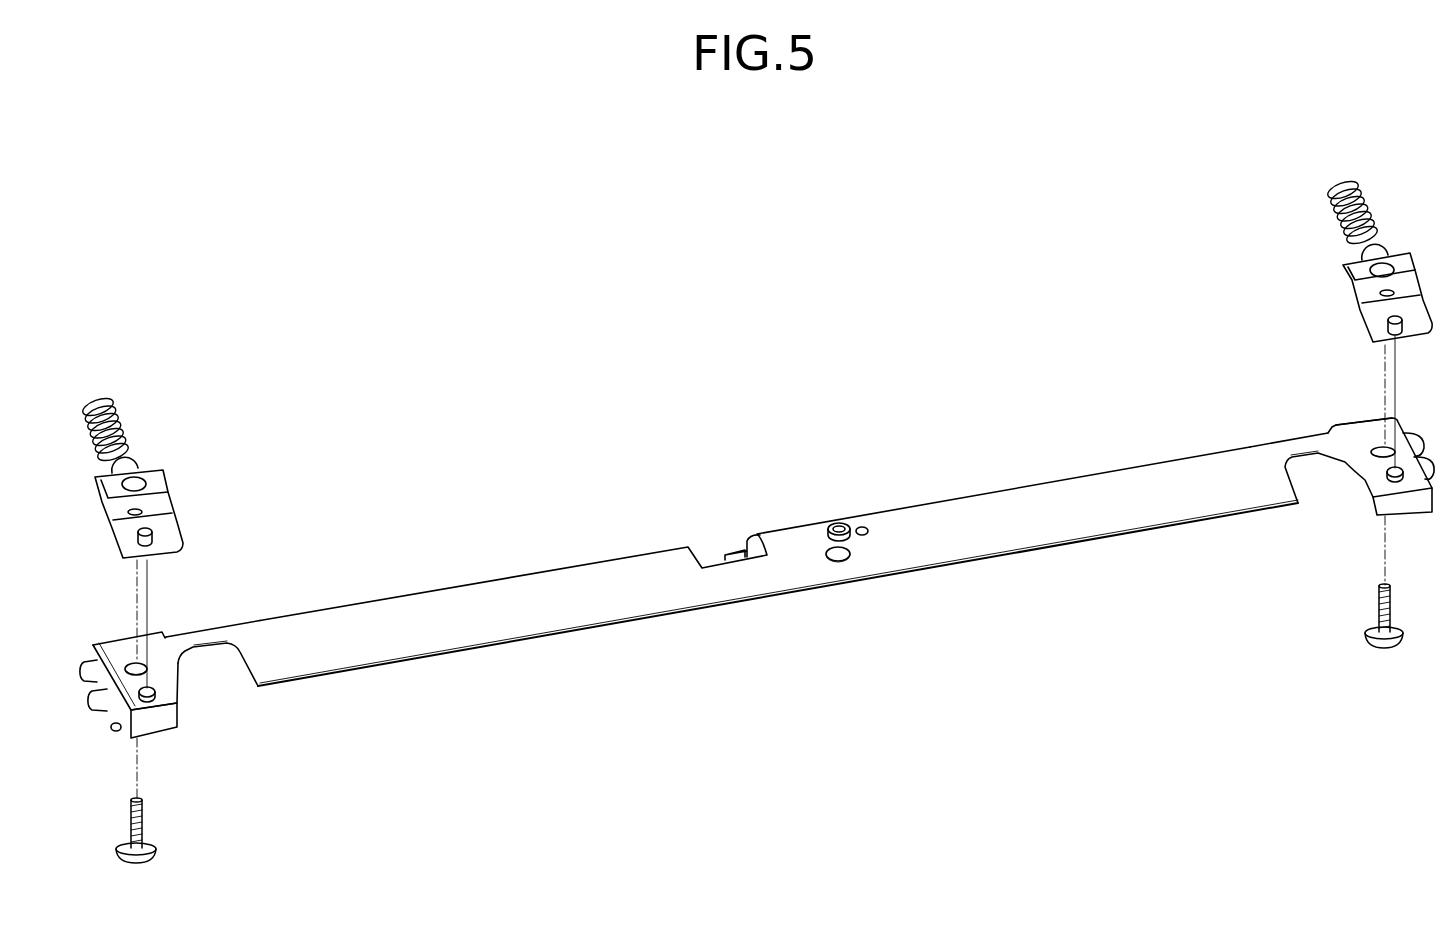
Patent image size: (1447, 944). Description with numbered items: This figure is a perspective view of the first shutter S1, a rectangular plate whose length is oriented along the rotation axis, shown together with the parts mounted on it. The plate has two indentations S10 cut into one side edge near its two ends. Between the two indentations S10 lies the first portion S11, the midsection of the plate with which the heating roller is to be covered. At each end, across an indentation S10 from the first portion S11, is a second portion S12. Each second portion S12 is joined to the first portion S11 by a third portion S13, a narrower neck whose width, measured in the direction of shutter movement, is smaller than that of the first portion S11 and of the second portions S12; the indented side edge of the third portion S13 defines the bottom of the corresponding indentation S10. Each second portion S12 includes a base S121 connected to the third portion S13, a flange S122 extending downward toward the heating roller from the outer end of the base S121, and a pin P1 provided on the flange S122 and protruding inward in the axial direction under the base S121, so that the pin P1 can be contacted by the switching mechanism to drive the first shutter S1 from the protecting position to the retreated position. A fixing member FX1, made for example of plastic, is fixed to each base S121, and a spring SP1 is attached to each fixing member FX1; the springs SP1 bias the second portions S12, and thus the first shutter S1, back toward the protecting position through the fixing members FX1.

The first shutter S1 is at (762, 599).
The indentation S10 is at (210, 652).
The first portion S11 is at (985, 542).
The second portion S12 is at (762, 540).
The base S121 is at (1368, 430).
The flange S122 is at (1426, 518).
The third portion S13 is at (208, 631).
The spring SP1 is at (117, 416).
The fixing member FX1 is at (162, 483).
The pin P1 is at (153, 727).